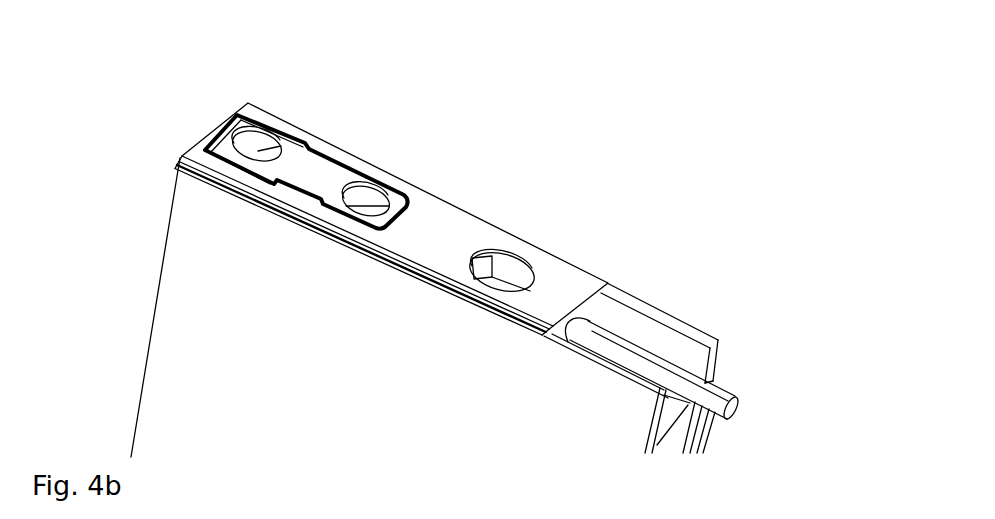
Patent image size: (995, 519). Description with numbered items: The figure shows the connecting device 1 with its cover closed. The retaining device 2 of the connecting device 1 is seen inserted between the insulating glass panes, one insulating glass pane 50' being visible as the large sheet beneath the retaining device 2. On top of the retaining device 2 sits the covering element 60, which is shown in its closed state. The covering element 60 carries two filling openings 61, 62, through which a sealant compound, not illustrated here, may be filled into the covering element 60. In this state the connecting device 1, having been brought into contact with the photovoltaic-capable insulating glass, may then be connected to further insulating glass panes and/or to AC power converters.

The connecting device 1 is at (498, 166).
The retaining device 2 is at (556, 266).
The insulating glass pane 50' is at (406, 307).
The covering element 60 is at (294, 168).
The filling opening 61 is at (259, 138).
The filling opening 62 is at (368, 189).